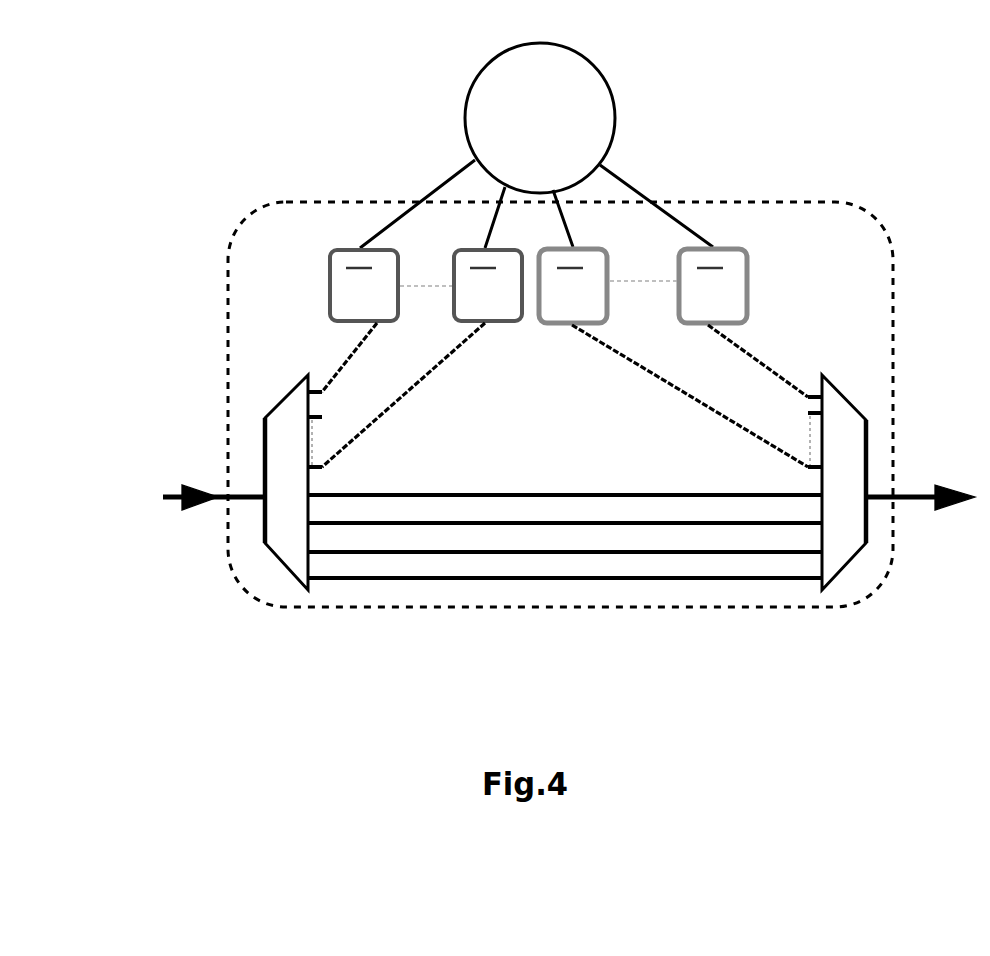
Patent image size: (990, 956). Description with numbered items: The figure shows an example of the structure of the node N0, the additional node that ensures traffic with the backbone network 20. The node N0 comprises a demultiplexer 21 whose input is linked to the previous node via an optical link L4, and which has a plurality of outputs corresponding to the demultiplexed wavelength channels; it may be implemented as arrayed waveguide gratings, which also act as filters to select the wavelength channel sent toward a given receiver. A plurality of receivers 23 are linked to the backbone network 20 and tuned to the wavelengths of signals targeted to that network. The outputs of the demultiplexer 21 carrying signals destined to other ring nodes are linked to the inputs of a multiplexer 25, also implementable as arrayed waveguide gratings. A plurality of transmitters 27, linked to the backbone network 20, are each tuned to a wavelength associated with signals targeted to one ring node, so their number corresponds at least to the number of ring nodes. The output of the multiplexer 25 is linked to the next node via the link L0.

The backbone network 20 is at (573, 50).
The receivers 23 is at (328, 290).
The transmitters 27 is at (608, 297).
The demultiplexer 21 is at (280, 440).
The multiplexer 25 is at (852, 457).
The node N0 is at (838, 202).
The optical link L4 is at (213, 507).
The link L0 is at (923, 500).